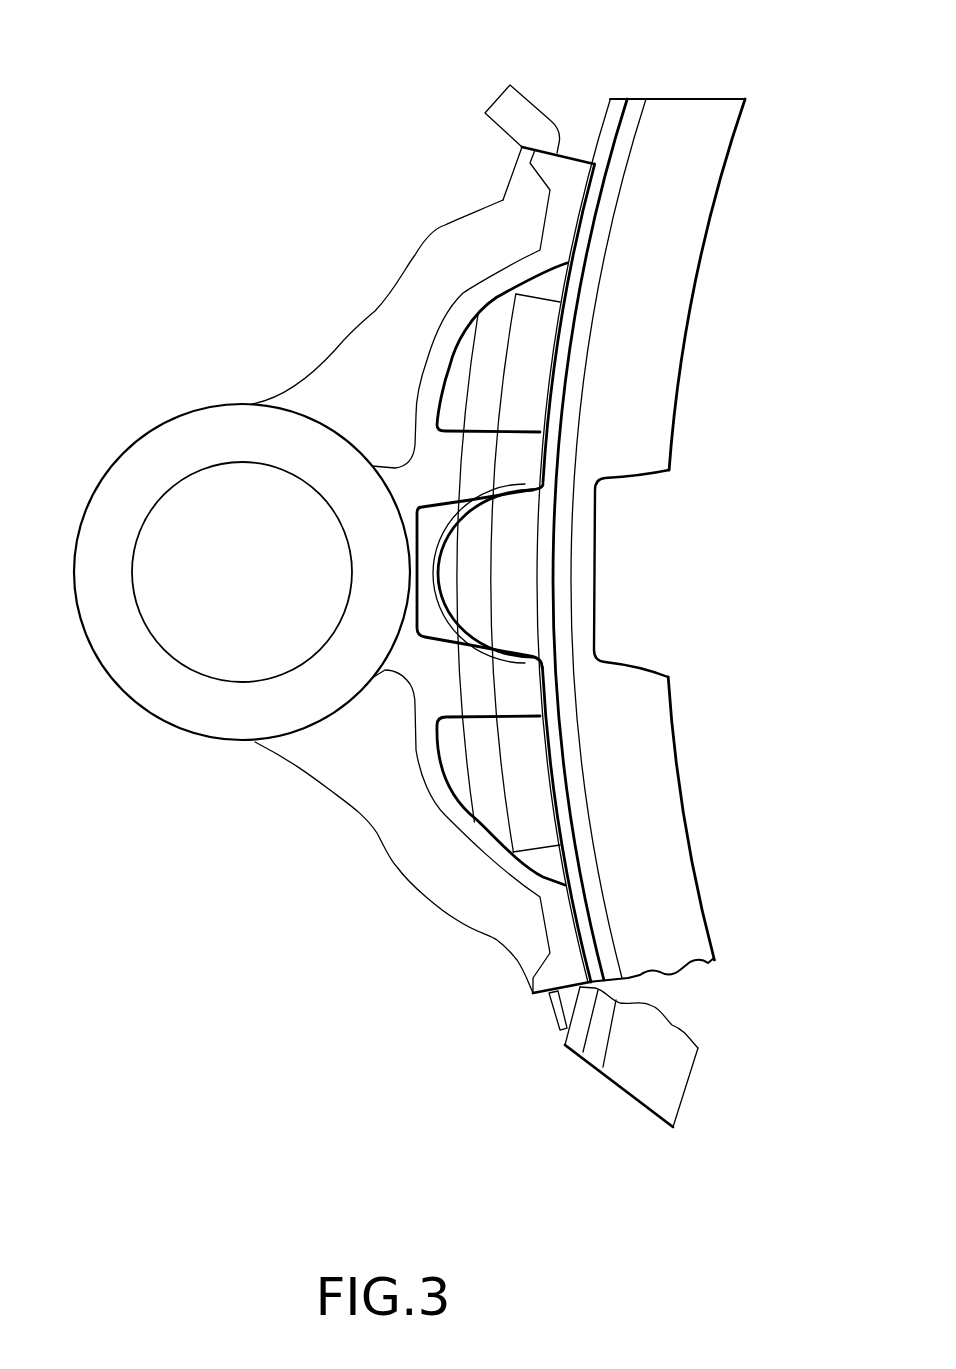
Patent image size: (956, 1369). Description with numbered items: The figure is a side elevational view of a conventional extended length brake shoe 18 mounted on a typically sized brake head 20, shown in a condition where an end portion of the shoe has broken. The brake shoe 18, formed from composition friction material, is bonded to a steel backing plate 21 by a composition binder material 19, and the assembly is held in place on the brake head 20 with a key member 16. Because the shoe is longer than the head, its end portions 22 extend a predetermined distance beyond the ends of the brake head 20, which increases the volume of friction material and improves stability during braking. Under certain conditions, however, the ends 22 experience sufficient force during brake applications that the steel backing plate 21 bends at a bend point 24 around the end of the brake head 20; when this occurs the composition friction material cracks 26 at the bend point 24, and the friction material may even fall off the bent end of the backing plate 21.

The key member 16 is at (498, 100).
The extended length brake shoe 18 is at (657, 383).
The composition binder material 19 is at (638, 112).
The brake head 20 is at (385, 343).
The steel backing plate 21 is at (492, 513).
The end portions of the brake shoe 22 is at (727, 110).
The bend point 24 is at (577, 988).
The cracks 26 is at (700, 998).